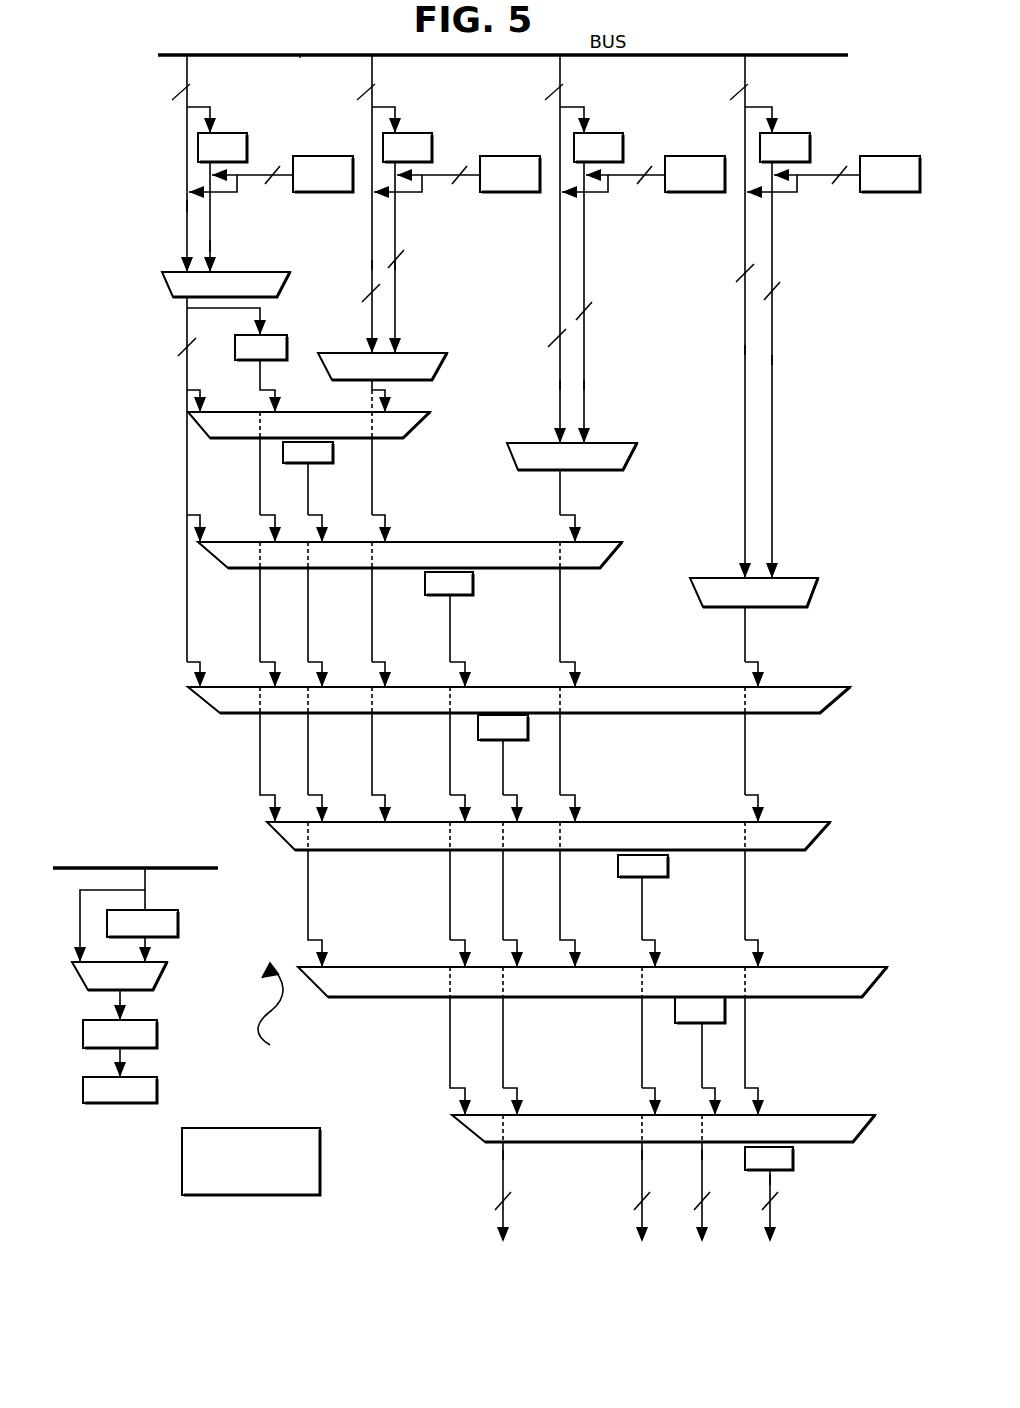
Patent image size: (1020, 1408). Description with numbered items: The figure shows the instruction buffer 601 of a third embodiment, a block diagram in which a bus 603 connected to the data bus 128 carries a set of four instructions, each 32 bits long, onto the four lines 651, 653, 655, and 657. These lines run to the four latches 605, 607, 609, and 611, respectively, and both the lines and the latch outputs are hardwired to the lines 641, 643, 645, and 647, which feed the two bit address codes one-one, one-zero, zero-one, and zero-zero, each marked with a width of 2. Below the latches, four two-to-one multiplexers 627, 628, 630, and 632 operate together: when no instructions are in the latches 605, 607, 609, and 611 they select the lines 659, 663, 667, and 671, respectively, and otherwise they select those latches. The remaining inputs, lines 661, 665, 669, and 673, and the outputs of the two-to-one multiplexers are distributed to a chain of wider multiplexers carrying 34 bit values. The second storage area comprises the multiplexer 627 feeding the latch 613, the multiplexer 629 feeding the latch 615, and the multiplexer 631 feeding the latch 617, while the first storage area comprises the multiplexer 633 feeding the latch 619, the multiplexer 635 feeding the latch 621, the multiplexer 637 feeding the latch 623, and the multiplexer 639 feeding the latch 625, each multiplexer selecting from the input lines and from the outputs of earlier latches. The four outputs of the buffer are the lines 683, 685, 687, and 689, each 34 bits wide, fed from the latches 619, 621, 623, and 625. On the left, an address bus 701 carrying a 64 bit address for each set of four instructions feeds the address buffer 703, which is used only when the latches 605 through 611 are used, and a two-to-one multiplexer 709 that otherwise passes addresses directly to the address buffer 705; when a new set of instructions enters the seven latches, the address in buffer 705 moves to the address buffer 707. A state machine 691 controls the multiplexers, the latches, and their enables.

The data bus 128 is at (160, 64).
The bus 603 is at (300, 56).
The 32-bit width indicator 32 is at (475, 86).
The 32 bit line 651 is at (187, 73).
The 32 bit line 653 is at (372, 73).
The 32 bit line 655 is at (560, 73).
The 32 bit line 657 is at (745, 73).
The 32 bit latch 605 is at (217, 189).
The 32 bit latch 607 is at (402, 230).
The 32 bit latch 609 is at (591, 275).
The 32 bit latch 611 is at (777, 342).
The line 641 is at (240, 190).
The line 643 is at (425, 190).
The line 645 is at (611, 190).
The line 647 is at (800, 190).
The 2-bit width indicator 2 is at (552, 170).
The line 659 is at (187, 212).
The line 661 is at (187, 250).
The two-to-one multiplexer 627 is at (278, 272).
The latch 613 is at (237, 565).
The line 663 is at (372, 265).
The line 665 is at (395, 265).
The two-to-one multiplexer 628 is at (435, 353).
The multiplexer 629 is at (405, 436).
The latch 615 is at (308, 704).
The line 667 is at (560, 385).
The line 669 is at (584, 398).
The two-to-one multiplexer 630 is at (620, 443).
The line 671 is at (745, 350).
The line 673 is at (772, 365).
The two-to-one multiplexer 632 is at (805, 578).
The multiplexer 631 is at (605, 542).
The latch 617 is at (449, 843).
The multiplexer 633 is at (832, 687).
The latch 619 is at (503, 978).
The multiplexer 635 is at (815, 822).
The latch 621 is at (643, 1048).
The multiplexer 637 is at (860, 967).
The latch 623 is at (700, 1119).
The multiplexer 639 is at (825, 1115).
The latch 625 is at (769, 1194).
The output line 683 is at (503, 1152).
The output line 685 is at (642, 1152).
The output line 687 is at (702, 1152).
The output line 689 is at (772, 1178).
The 34-bit width indicator 34 is at (483, 735).
The address bus 64 is at (55, 884).
The address bus 701 is at (155, 868).
The address buffer 703 is at (180, 926).
The two-to-one multiplexer 709 is at (78, 975).
The address buffer 705 is at (158, 1035).
The address buffer 707 is at (158, 1091).
The state machine 691 is at (285, 1128).
The instruction buffer 601 is at (263, 1017).